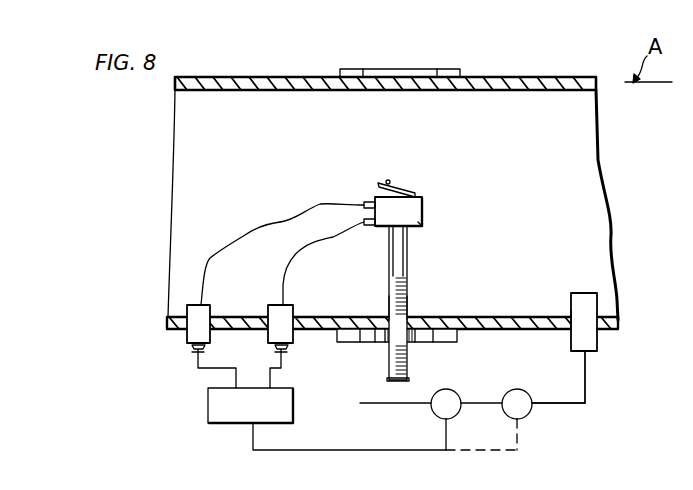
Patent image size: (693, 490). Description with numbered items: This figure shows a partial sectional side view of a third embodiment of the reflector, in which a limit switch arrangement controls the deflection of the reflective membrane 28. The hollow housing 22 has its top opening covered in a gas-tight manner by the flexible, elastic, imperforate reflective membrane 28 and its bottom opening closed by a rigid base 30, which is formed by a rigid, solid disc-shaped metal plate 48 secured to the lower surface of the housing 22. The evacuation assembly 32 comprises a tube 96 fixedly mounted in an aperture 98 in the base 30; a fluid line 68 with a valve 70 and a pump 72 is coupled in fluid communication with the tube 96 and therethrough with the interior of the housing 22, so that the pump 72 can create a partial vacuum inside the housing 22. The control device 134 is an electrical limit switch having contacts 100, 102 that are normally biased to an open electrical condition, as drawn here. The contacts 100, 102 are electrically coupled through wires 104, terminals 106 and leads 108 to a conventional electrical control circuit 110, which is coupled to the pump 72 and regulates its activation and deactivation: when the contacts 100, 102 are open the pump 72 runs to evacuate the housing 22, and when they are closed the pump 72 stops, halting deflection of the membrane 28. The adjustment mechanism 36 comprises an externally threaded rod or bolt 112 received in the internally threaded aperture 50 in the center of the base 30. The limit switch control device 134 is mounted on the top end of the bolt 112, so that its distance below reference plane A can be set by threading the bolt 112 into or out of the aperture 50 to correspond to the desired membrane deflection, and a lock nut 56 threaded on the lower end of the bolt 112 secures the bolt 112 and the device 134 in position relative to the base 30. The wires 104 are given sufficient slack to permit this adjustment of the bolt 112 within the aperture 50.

The hollow housing 22 is at (600, 173).
The reflective membrane 28 is at (491, 84).
The rigid base 30 is at (611, 340).
The evacuation assembly 32 is at (482, 426).
The adjustment mechanism 36 is at (412, 298).
The metal plate 48 is at (170, 322).
The internally threaded aperture 50 is at (391, 308).
The lock nut 56 is at (380, 343).
The fluid line 68 is at (566, 405).
The valve 70 is at (527, 391).
The pump 72 is at (444, 390).
The tube 96 is at (586, 298).
The aperture 98 is at (576, 319).
The contact 100 is at (400, 193).
The contact 102 is at (352, 202).
The wires 104 is at (217, 260).
The terminals 106 is at (192, 338).
The leads 108 is at (270, 370).
The electrical control circuit 110 is at (222, 414).
The threaded bolt 112 is at (395, 241).
The control device 134 is at (421, 233).